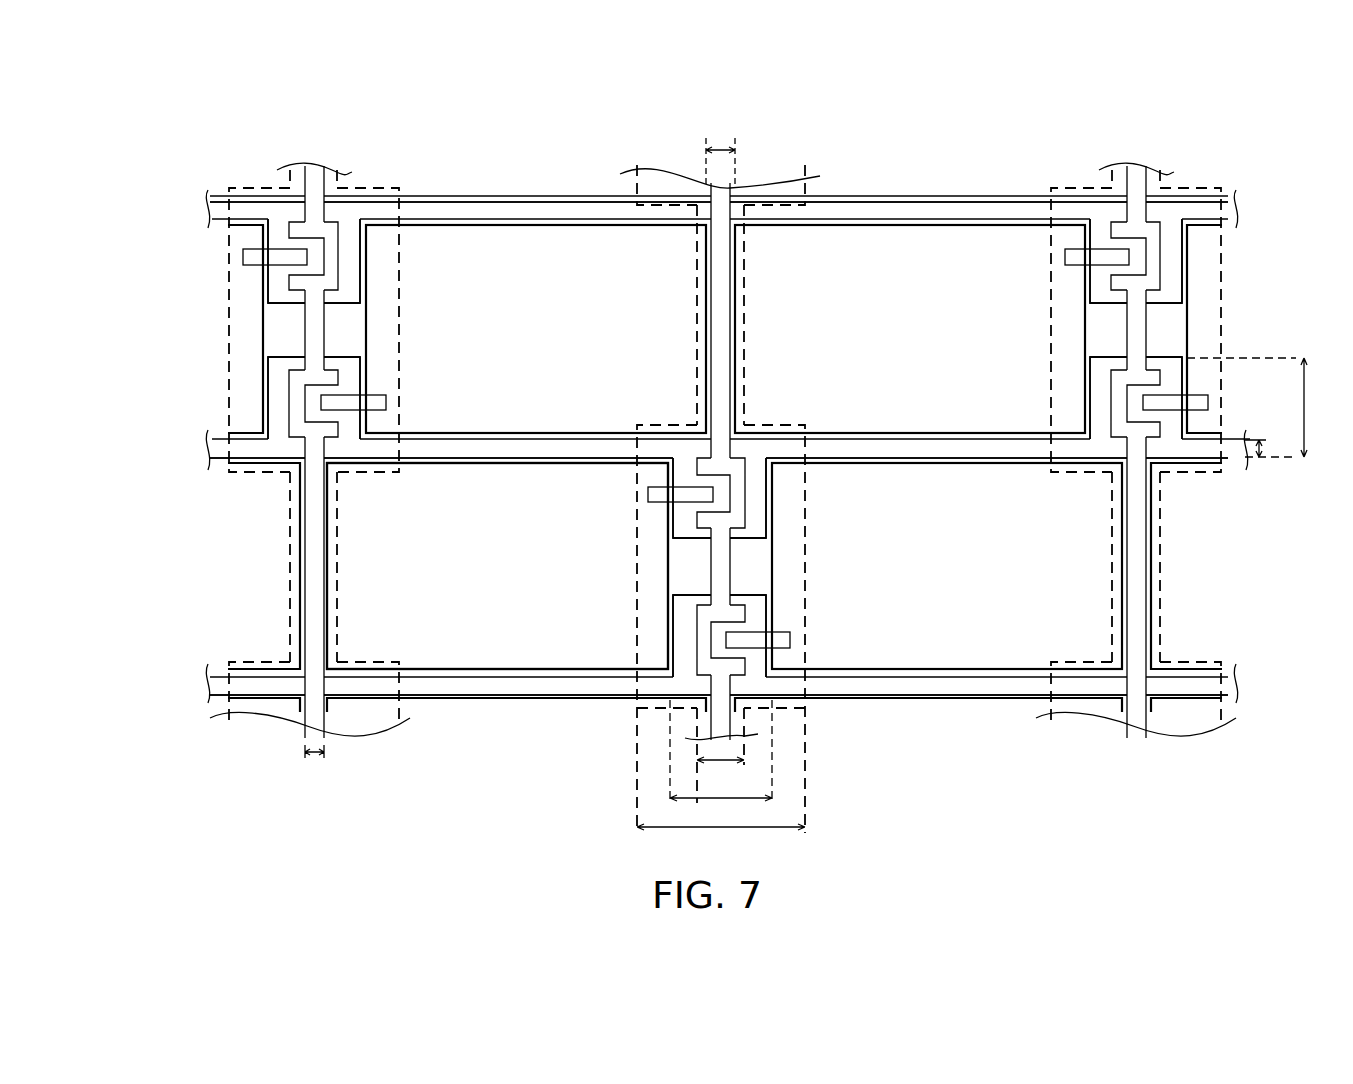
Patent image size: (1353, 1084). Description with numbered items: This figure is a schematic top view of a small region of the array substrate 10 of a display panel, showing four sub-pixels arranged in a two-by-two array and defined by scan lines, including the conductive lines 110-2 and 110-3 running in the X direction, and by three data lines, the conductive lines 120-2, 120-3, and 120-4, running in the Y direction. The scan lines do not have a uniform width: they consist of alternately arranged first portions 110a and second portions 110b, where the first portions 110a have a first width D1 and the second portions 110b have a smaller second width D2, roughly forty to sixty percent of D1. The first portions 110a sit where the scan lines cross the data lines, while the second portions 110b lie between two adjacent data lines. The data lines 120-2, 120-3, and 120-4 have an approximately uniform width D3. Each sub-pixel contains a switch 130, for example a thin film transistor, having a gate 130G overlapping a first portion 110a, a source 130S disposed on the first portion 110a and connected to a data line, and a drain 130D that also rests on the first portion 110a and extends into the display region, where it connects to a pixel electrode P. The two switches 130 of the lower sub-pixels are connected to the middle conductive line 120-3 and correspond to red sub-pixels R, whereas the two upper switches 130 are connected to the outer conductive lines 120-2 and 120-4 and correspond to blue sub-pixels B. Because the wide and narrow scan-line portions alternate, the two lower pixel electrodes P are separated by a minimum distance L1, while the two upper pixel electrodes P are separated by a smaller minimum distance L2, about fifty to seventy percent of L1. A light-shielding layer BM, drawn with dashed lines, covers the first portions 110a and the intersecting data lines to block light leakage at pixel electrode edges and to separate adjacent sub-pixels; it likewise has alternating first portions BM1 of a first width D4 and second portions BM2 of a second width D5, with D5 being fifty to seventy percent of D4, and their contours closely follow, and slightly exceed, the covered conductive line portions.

The array substrate 10 is at (233, 122).
The conductive line 120-2 is at (320, 144).
The conductive line 120-3 is at (725, 163).
The conductive line 120-4 is at (1142, 144).
The conductive line 110-2 is at (142, 370).
The conductive line 110-3 is at (142, 247).
The first portion 110a is at (275, 270).
The second portion 110b is at (222, 212).
The switch 130 is at (725, 509).
The source 130S is at (730, 668).
The drain 130D is at (781, 640).
The gate 130G is at (720, 643).
The blue sub-pixel B is at (527, 350).
The red sub-pixel R is at (527, 589).
The pixel electrode P is at (525, 681).
The light-shielding layer BM is at (725, 461).
The first portion BM1 is at (1051, 238).
The second portion BM2 is at (1112, 176).
The minimum distance L1 is at (721, 763).
The minimum distance L2 is at (720, 142).
The first width D1 is at (1260, 407).
The second width D2 is at (1267, 447).
The width D3 is at (313, 765).
The first width D4 is at (721, 839).
The second width D5 is at (720, 775).